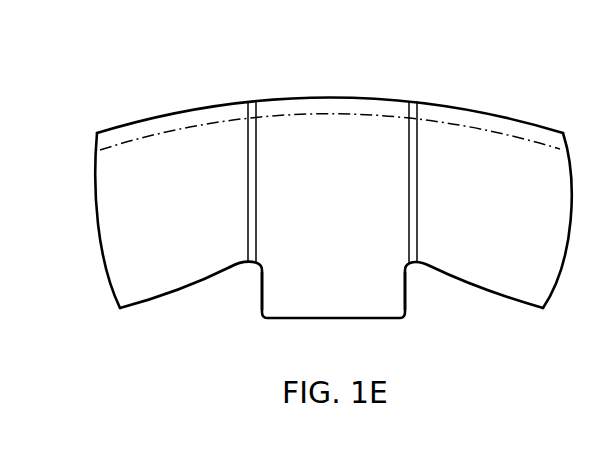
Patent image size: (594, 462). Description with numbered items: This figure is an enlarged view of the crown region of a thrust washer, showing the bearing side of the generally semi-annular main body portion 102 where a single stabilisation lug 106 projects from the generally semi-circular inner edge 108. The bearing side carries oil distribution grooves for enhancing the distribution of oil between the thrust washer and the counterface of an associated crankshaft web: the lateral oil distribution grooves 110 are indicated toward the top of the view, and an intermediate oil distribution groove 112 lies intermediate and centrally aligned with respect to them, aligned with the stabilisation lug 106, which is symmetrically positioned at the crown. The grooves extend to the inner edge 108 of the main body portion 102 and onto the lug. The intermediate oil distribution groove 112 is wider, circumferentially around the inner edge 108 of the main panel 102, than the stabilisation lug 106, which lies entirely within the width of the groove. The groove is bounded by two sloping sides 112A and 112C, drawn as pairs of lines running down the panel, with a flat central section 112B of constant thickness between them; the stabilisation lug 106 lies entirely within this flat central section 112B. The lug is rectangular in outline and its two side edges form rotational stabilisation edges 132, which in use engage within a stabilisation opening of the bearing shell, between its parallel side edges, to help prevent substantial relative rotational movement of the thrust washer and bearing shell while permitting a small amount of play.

The main body portion 102 is at (196, 216).
The stabilisation lug 106 is at (276, 318).
The inner edge 108 is at (143, 304).
The lateral oil distribution grooves 110 is at (330, 75).
The intermediate oil distribution groove 112 is at (298, 131).
The sloping side 112A is at (248, 101).
The flat central section 112B is at (300, 130).
The sloping side 112C is at (413, 130).
The rotational stabilisation edges 132 is at (258, 300).